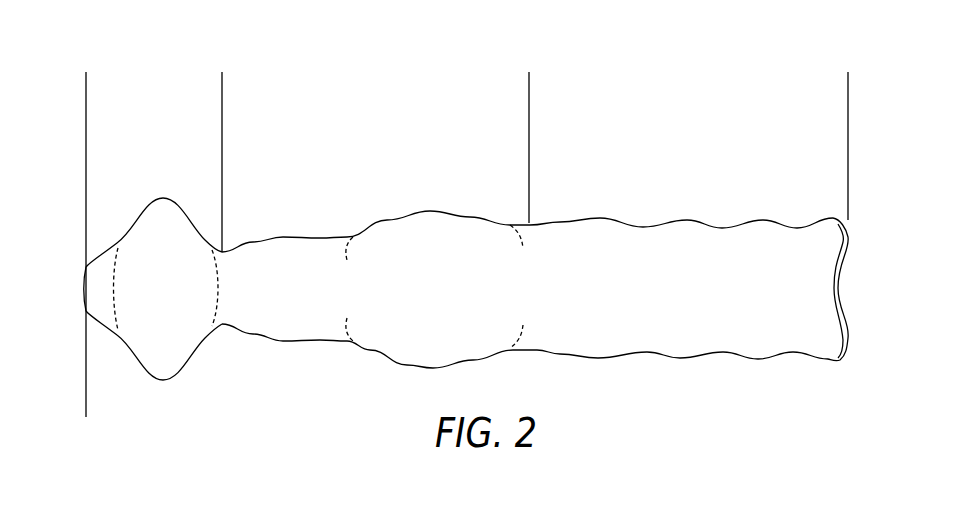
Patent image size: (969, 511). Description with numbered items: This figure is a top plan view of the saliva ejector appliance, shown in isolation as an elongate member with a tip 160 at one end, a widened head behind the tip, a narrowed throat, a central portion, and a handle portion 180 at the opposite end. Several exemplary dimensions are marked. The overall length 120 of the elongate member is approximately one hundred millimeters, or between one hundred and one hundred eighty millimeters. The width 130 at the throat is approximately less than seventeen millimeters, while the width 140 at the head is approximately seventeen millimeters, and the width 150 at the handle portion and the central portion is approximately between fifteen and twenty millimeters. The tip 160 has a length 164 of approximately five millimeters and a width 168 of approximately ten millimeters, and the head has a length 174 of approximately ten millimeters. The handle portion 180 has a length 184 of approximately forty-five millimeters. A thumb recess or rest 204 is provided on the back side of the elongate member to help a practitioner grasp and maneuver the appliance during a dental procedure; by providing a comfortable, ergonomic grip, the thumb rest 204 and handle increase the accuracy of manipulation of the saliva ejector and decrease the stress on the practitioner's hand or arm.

The length 120 is at (848, 134).
The width at the throat 130 is at (226, 252).
The width at the head 140 is at (164, 380).
The width at the handle portion and central portion 150 is at (598, 220).
The tip 160 is at (97, 288).
The length of the tip 164 is at (48, 388).
The width of the tip 168 is at (69, 362).
The length of the head 174 is at (86, 96).
The handle portion 180 is at (805, 317).
The length of the handle portion 184 is at (529, 95).
The thumb recess or rest 204 is at (437, 293).